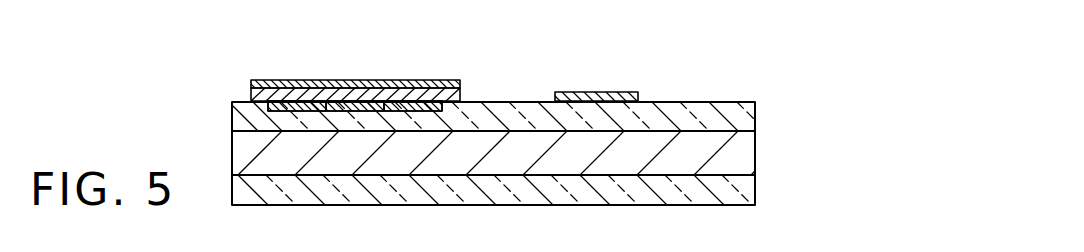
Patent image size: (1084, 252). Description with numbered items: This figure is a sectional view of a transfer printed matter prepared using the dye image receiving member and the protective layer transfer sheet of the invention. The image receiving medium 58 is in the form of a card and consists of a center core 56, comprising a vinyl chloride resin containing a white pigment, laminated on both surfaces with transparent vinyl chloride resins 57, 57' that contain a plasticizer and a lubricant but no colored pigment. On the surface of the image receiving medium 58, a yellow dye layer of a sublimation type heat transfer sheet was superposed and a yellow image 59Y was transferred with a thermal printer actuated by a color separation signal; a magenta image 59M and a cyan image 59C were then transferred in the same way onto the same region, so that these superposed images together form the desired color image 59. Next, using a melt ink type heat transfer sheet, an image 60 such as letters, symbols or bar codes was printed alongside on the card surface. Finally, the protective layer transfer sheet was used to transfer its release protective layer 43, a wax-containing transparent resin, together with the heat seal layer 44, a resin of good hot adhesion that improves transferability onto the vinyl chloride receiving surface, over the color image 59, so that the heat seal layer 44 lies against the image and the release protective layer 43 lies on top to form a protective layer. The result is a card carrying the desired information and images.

The release protective layer 43 is at (462, 82).
The heat seal layer 44 is at (462, 98).
The center core 56 is at (745, 160).
The transparent vinyl chloride resin 57 is at (508, 117).
The transparent vinyl chloride resin 57' is at (530, 194).
The image receiving medium 58 is at (544, 153).
The color image 59 is at (352, 55).
The yellow image 59Y is at (278, 104).
The magenta image 59M is at (352, 104).
The cyan image 59C is at (419, 76).
The image such as letters 60 is at (597, 91).